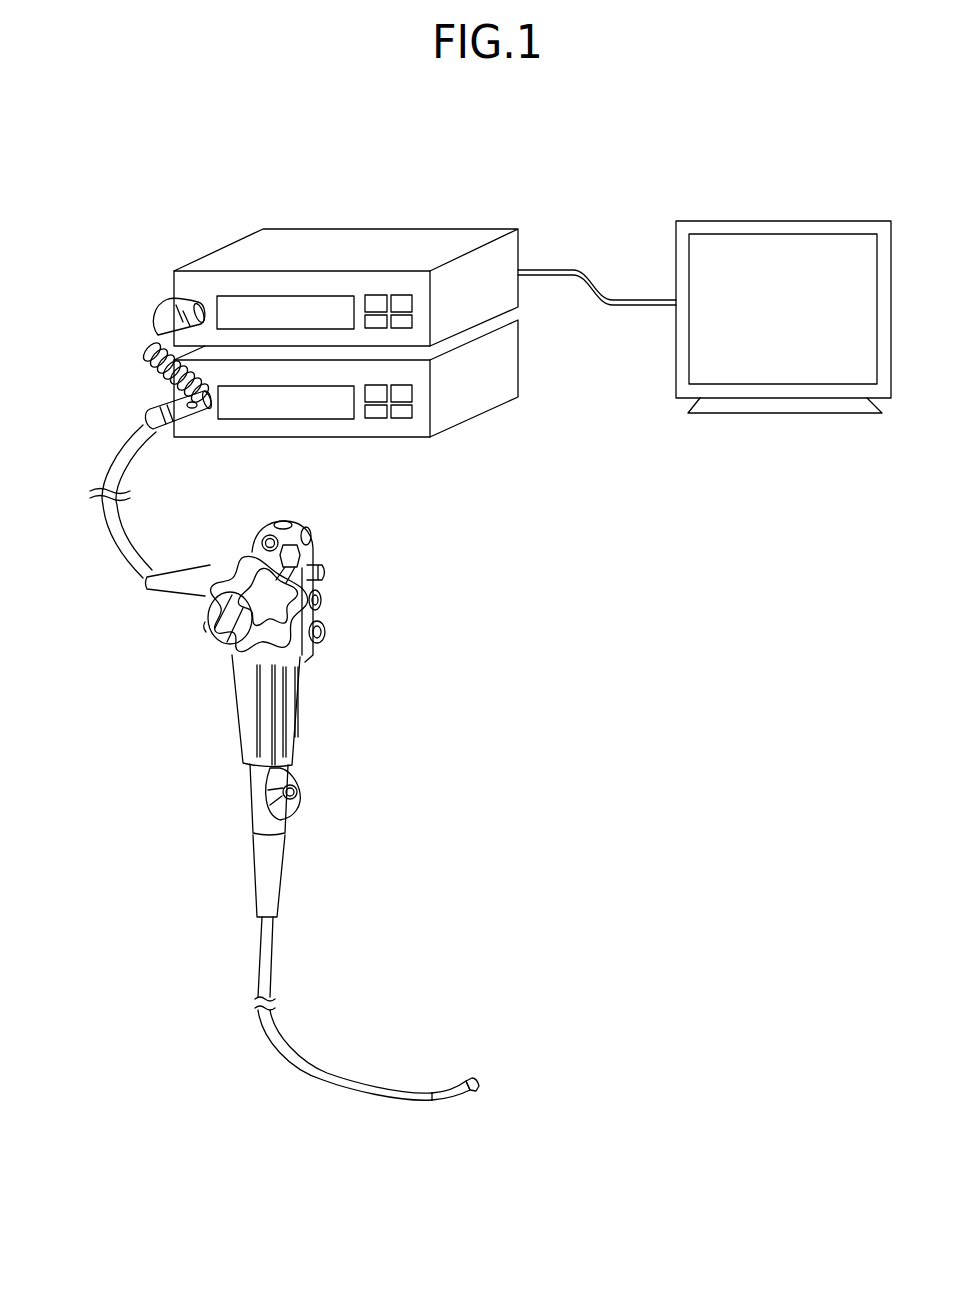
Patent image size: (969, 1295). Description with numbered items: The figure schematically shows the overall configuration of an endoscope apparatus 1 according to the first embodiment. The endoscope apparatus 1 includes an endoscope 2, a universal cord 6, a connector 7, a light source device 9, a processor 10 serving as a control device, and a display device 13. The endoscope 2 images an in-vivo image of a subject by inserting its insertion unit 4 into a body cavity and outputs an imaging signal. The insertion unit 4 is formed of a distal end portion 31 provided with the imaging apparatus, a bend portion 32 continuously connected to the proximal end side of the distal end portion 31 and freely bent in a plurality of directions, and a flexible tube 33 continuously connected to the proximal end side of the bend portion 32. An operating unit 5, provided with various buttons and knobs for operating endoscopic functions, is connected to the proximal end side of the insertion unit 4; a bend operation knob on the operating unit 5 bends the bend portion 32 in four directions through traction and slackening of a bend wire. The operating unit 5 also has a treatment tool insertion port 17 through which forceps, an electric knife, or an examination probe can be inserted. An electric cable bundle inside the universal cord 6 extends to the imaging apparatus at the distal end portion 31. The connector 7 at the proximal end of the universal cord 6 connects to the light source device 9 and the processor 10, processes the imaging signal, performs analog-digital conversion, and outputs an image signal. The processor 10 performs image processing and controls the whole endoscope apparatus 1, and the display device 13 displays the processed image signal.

The endoscope apparatus 1 is at (823, 150).
The endoscope 2 is at (413, 661).
The insertion unit 4 is at (315, 1078).
The operating unit 5 is at (320, 612).
The universal cord 6 is at (105, 527).
The connector 7 is at (173, 397).
The light source device 9 is at (508, 362).
The processor 10 is at (485, 236).
The display device 13 is at (785, 228).
The treatment tool insertion port 17 is at (300, 790).
The distal end portion 31 is at (474, 1097).
The bend portion 32 is at (453, 1083).
The flexible tube 33 is at (270, 965).